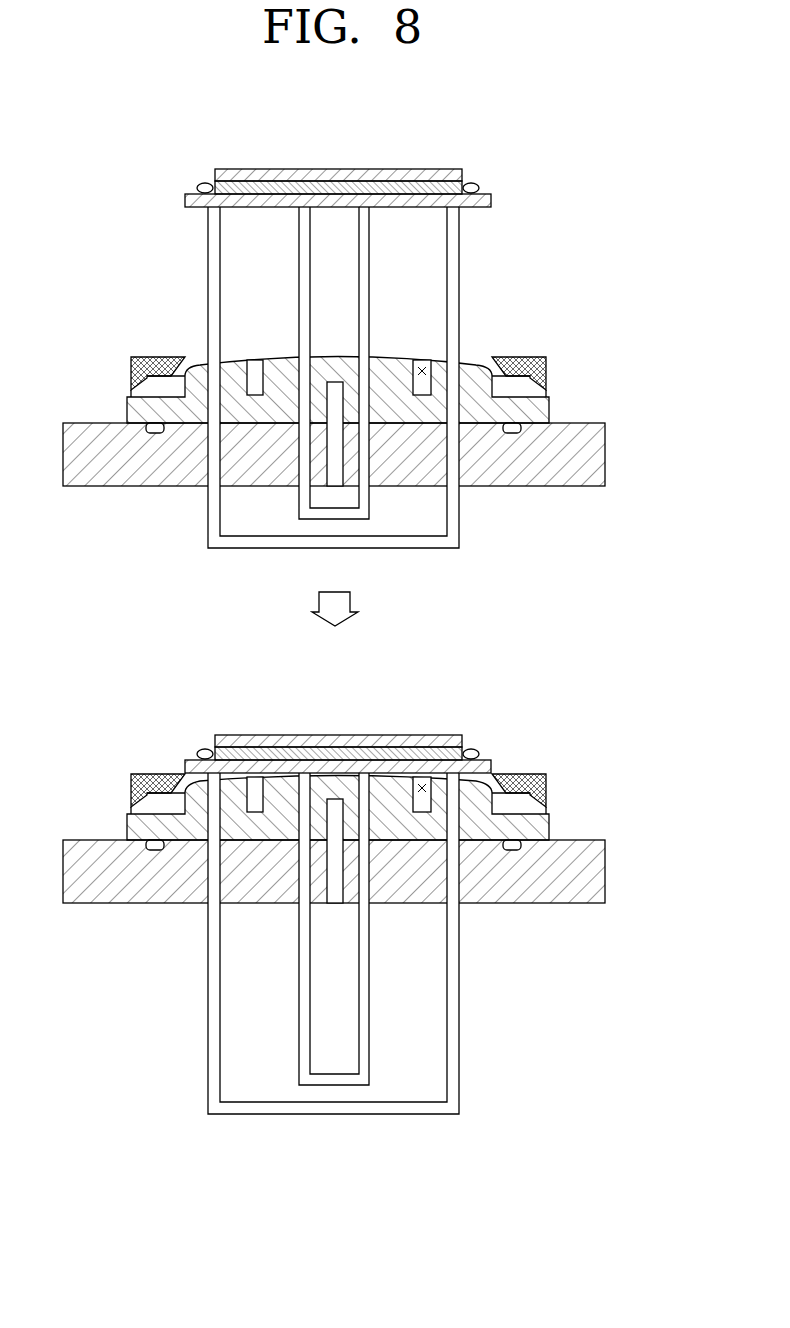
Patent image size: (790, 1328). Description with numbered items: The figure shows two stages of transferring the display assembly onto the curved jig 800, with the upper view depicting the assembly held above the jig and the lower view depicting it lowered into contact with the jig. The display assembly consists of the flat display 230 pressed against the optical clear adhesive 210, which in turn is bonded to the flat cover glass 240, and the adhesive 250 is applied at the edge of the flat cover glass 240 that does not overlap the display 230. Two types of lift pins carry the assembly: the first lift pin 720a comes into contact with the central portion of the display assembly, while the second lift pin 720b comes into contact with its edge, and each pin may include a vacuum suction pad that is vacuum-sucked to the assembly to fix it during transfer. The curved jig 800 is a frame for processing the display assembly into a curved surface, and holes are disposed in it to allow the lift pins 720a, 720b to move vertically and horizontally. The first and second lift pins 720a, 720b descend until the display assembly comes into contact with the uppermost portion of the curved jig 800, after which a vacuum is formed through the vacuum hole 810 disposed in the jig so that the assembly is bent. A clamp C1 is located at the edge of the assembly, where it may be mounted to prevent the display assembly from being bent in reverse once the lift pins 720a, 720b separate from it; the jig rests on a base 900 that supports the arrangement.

The flat display 230 is at (381, 170).
The optical clear adhesive 210 is at (432, 186).
The adhesive 250 is at (480, 187).
The flat cover glass 240 is at (491, 200).
The second lift pin 720b is at (460, 259).
The first lift pin 720a is at (368, 301).
The vacuum hole 810 is at (422, 370).
The clamp C1 is at (546, 371).
The curved jig 800 is at (550, 410).
The stage / base 900 is at (598, 458).